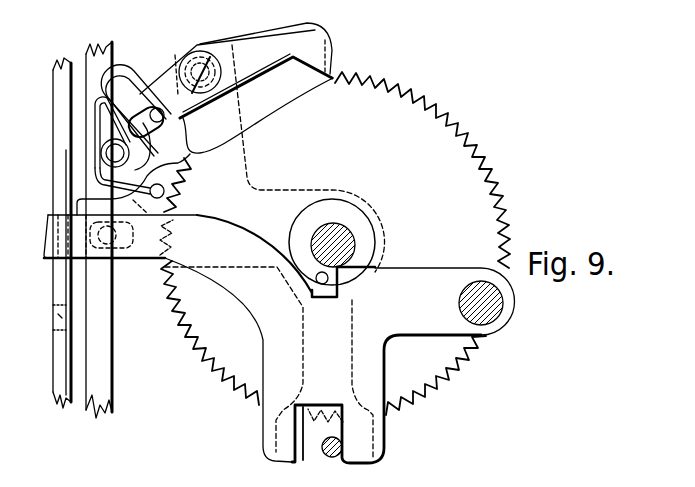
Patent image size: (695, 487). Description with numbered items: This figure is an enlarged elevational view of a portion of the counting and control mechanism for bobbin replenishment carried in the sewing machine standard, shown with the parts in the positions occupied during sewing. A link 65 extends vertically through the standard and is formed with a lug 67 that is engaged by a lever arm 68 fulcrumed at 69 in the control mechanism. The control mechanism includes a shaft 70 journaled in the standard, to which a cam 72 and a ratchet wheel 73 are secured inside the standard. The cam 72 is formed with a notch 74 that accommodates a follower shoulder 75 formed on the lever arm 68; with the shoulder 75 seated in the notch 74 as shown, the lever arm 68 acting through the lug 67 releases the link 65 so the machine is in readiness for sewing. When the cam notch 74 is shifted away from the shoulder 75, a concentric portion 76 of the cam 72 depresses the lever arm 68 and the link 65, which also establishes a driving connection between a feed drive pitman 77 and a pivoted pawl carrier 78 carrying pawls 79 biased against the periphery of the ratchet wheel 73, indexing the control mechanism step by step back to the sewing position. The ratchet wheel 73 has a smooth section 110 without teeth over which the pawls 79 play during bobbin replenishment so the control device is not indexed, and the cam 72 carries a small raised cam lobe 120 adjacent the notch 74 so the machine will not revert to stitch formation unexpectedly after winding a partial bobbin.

The link 65 is at (58, 368).
The lug 67 is at (54, 282).
The lever arm 68 is at (57, 252).
The fulcrum 69 is at (481, 307).
The shaft 70 is at (345, 232).
The cam 72 is at (337, 200).
The ratchet wheel 73 is at (422, 125).
The notch 74 is at (377, 268).
The follower shoulder 75 is at (345, 270).
The concentric portion 76 is at (297, 225).
The feed drive pitman 77 is at (103, 312).
The pawl carrier 78 is at (215, 115).
The pawls 79 is at (323, 47).
The smooth section 110 is at (266, 82).
The raised cam lobe 120 is at (318, 296).